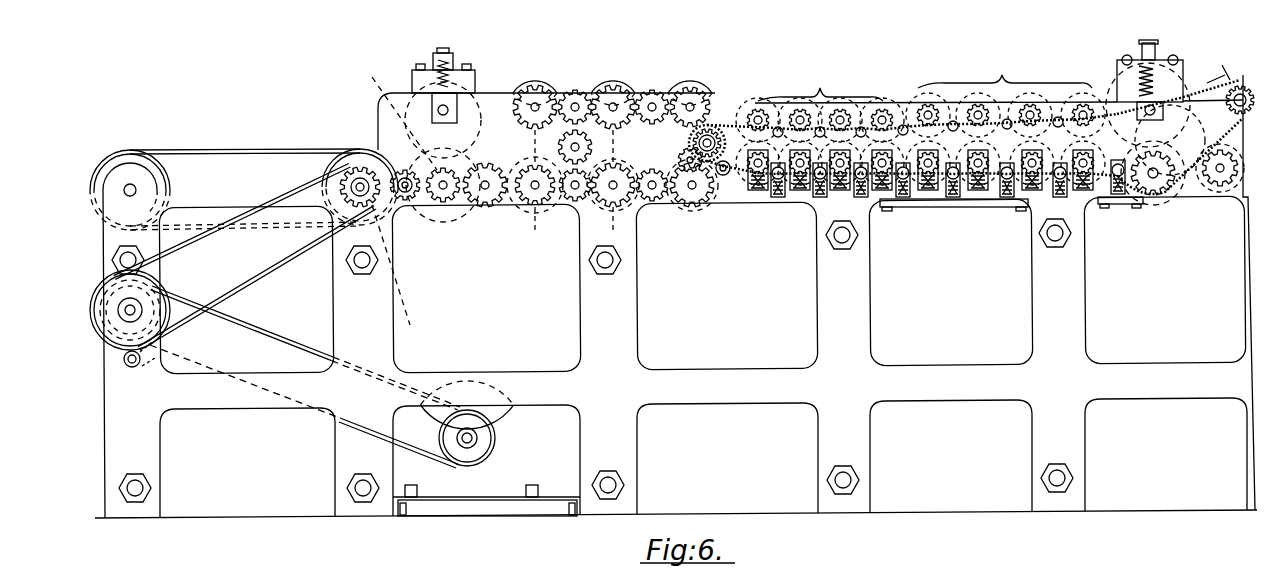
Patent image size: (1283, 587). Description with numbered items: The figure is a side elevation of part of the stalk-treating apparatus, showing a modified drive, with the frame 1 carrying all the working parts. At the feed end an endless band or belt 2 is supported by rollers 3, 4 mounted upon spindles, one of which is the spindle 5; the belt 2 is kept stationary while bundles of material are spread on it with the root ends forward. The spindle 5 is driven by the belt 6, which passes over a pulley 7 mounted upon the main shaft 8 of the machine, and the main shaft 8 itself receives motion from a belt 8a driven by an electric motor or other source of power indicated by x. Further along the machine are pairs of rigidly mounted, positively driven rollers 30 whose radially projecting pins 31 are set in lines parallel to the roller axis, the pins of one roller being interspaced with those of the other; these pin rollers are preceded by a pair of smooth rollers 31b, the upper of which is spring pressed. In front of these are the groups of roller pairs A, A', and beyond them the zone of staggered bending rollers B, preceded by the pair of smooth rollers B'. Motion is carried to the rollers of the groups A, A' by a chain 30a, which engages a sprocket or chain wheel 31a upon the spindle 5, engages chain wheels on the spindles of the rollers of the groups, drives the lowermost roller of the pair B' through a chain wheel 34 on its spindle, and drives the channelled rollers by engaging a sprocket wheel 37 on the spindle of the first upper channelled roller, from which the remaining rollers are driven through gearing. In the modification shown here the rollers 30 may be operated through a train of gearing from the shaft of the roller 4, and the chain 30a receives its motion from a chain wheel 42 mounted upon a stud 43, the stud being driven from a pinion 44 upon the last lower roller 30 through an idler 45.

The frame 1 is at (676, 296).
The endless band or belt 2 is at (251, 150).
The roller 3 is at (126, 152).
The roller 4 is at (362, 150).
The spindle 5 is at (347, 193).
The belt 6 is at (293, 260).
The pulley 7 is at (100, 312).
The main shaft 8 is at (128, 312).
The belt 8a is at (217, 370).
The pin rollers 30 is at (528, 83).
The chain 30a is at (1196, 172).
The pins 31 is at (517, 208).
The sprocket or chain wheel 31a is at (403, 272).
The smooth rollers 31b is at (420, 109).
The chain wheel 34 is at (1155, 180).
The sprocket wheel 37 is at (1178, 136).
The chain wheel 42 is at (712, 126).
The stud 43 is at (718, 127).
The pinion 44 is at (728, 178).
The idler 45 is at (690, 172).
The electric motor or other source of power x is at (486, 448).
The group of rollers A is at (820, 85).
The group of rollers A' is at (1005, 70).
The zone of bending rollers B is at (1230, 78).
The pair of smooth rollers B' is at (1135, 93).